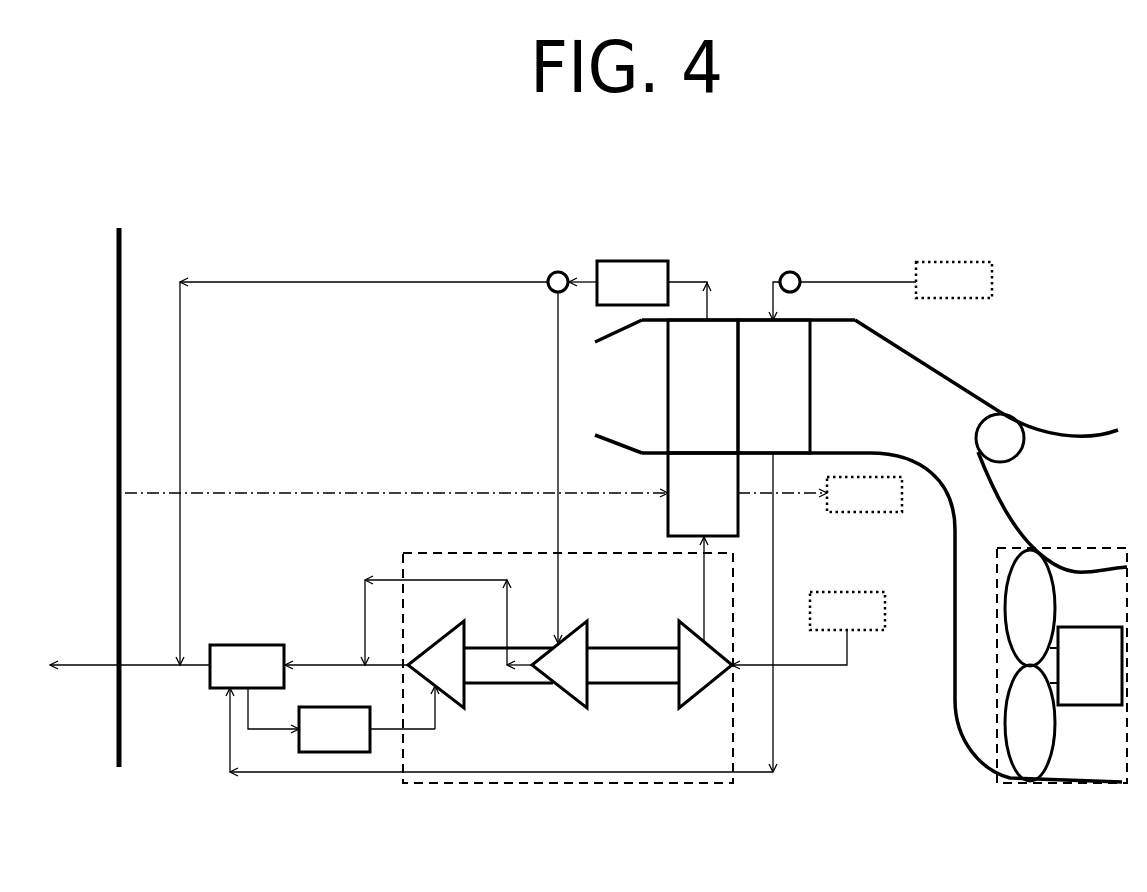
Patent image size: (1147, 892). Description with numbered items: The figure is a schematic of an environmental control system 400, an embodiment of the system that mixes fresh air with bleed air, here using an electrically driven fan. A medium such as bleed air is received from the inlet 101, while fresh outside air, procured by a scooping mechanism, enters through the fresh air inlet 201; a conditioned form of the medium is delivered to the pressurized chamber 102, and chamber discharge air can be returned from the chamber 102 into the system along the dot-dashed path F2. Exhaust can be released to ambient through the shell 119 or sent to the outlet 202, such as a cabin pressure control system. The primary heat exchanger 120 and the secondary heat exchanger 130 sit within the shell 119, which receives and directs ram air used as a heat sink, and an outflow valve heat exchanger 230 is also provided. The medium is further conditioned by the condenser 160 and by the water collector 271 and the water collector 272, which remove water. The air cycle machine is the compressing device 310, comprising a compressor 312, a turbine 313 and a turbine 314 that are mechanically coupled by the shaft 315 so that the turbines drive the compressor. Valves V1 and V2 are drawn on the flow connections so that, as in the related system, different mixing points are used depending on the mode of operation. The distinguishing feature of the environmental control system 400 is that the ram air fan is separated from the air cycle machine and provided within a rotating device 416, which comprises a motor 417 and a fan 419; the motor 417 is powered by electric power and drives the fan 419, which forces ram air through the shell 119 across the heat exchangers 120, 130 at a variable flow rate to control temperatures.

The environmental control system 400 is at (1060, 134).
The chamber 102 is at (117, 227).
The inlet 101 is at (954, 280).
The outlet 202 is at (864, 494).
The inlet 201 is at (847, 611).
The shell 119 is at (999, 412).
The primary heat exchanger 120 is at (793, 399).
The secondary heat exchanger 130 is at (722, 399).
The outflow valve heat exchanger 230 is at (722, 505).
The condenser 160 is at (266, 677).
The water collector 271 is at (651, 294).
The water collector 272 is at (354, 740).
The compressing device 310 is at (547, 687).
The compressor 312 is at (721, 677).
The turbine 313 is at (460, 677).
The turbine 314 is at (581, 677).
The shaft 315 is at (616, 647).
The rotating device 416 is at (1051, 678).
The motor 417 is at (1109, 677).
The fan 419 is at (1042, 557).
The first valve V1 is at (781, 274).
The second valve V2 is at (550, 277).
The path for the medium F2 is at (330, 492).